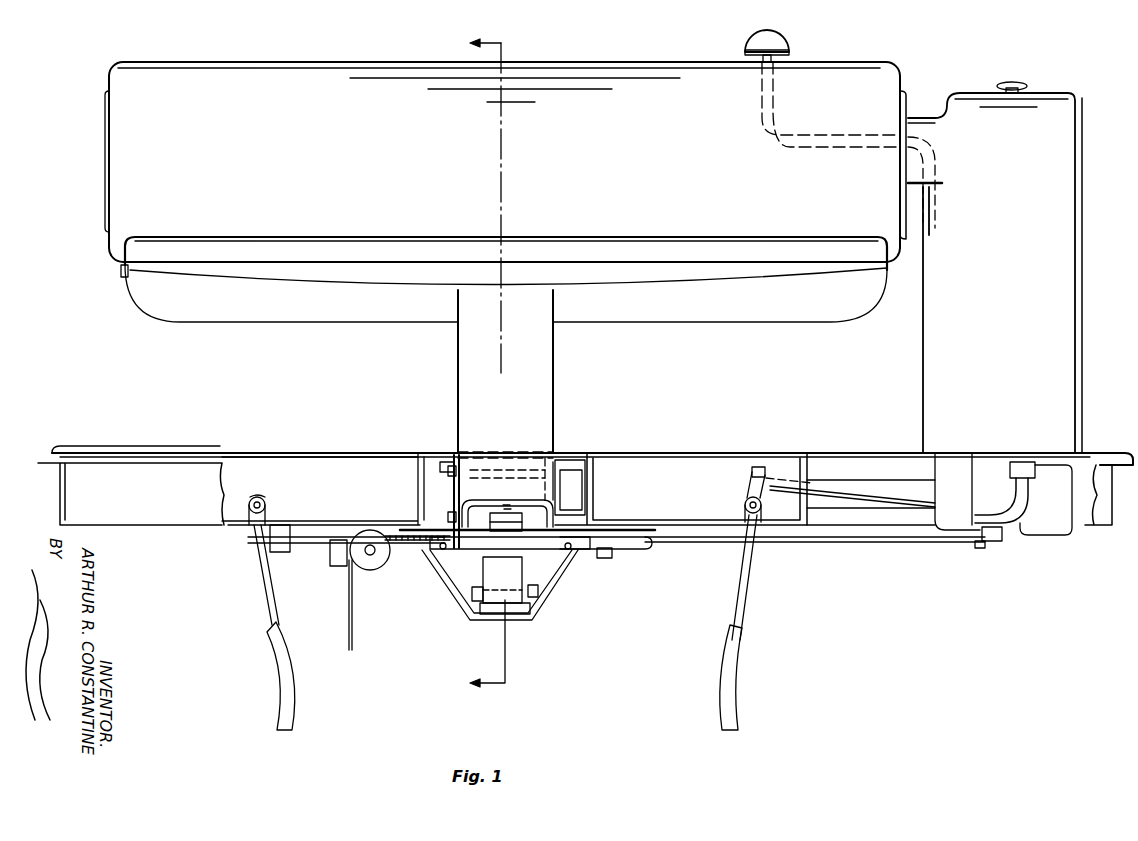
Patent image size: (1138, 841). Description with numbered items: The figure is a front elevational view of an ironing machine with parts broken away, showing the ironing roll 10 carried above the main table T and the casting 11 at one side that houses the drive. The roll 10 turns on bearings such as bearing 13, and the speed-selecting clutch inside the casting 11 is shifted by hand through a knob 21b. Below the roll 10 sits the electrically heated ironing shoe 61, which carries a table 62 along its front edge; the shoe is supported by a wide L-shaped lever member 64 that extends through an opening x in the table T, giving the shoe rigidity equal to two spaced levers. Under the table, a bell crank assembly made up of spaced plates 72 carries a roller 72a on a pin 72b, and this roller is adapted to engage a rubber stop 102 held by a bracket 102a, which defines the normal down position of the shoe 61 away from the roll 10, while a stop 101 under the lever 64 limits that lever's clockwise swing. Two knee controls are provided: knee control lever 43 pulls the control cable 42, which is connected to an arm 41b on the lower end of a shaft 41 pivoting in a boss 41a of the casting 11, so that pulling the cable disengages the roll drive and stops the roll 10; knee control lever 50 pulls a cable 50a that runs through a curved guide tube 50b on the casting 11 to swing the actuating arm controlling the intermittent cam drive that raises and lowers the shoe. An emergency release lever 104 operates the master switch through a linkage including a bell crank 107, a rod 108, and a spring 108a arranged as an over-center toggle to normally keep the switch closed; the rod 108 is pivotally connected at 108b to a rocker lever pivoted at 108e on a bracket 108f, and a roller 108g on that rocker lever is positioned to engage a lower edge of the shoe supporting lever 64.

The roll 10 is at (232, 75).
The casting 11 is at (1052, 127).
The bearing 13 is at (478, 364).
The knob 21b is at (1010, 88).
The shaft 41 is at (990, 550).
The boss 41a is at (982, 489).
The arm 41b is at (1004, 540).
The control cable 42 is at (314, 548).
The knee control lever 43 is at (290, 690).
The knee control lever 50 is at (723, 684).
The cable 50a is at (895, 505).
The curved guide tube 50b is at (1028, 497).
The ironing shoe 61 is at (120, 272).
The table 62 is at (162, 272).
The lever member 64 is at (527, 391).
The spaced plates of bell crank lever 72 is at (485, 574).
The roller 72a is at (497, 585).
The pin 72b is at (470, 602).
The stop 101 is at (522, 486).
The rubber stop 102 is at (520, 608).
The bracket 102a is at (560, 602).
The emergency release lever 104 is at (790, 38).
The bell crank 107 is at (507, 462).
The rod 108 is at (462, 462).
The spring 108a is at (450, 470).
The pivotal connection 108b is at (445, 462).
The pivot 108e is at (450, 517).
The bracket 108f is at (398, 566).
The roller 108g is at (452, 566).
The main table T is at (357, 450).
The opening x is at (556, 460).